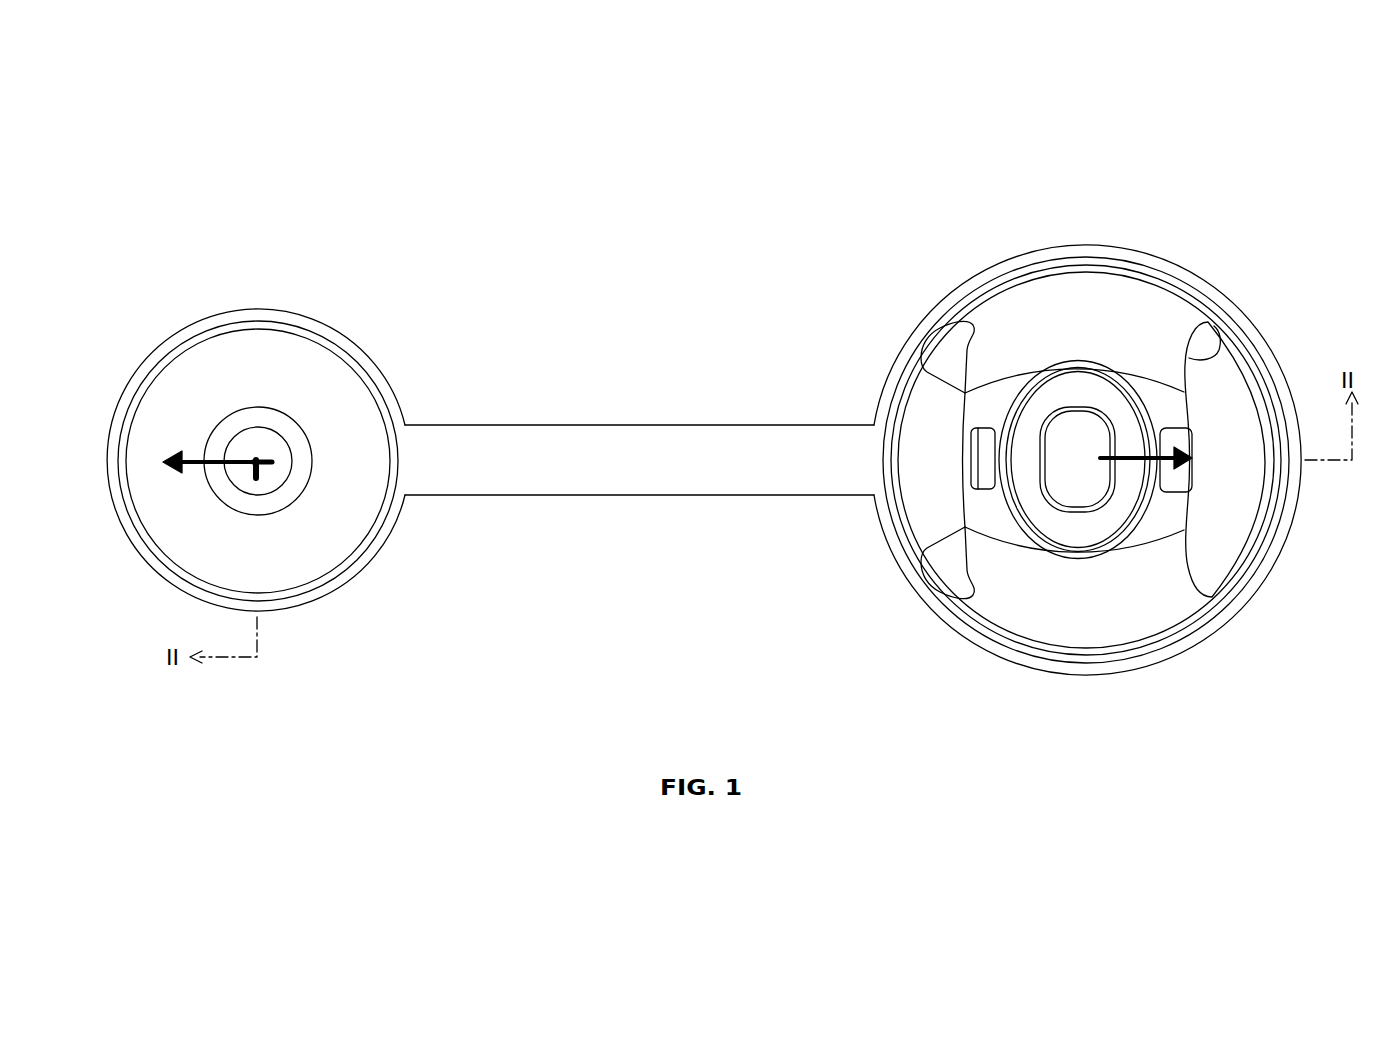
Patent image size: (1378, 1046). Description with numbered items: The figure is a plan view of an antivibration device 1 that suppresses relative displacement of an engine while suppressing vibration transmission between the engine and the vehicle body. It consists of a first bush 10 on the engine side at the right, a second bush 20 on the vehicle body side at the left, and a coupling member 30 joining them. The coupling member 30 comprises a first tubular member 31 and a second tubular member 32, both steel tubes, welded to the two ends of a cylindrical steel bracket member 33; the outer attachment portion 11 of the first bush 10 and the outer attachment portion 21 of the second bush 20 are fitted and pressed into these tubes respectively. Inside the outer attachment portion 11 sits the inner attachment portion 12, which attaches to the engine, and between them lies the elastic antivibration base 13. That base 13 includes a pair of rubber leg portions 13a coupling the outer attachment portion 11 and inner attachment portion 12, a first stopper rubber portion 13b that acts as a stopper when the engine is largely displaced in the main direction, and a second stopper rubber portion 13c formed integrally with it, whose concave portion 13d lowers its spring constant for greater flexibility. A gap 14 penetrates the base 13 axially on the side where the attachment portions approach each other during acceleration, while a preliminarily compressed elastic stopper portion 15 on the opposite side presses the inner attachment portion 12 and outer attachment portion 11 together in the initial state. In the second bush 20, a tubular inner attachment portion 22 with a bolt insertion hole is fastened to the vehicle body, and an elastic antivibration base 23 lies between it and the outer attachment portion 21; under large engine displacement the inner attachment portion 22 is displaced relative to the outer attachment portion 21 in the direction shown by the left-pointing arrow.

The antivibration device 1 is at (937, 138).
The first bush 10 is at (1222, 218).
The outer attachment portion 11 is at (972, 297).
The inner attachment portion 12 is at (1081, 388).
The antivibration base 13 is at (1143, 692).
The rubber leg portions 13a is at (1047, 294).
The first stopper rubber portion 13b is at (1190, 440).
The second stopper rubber portion 13c is at (963, 458).
The concave portion 13d is at (990, 437).
The gap 14 is at (1212, 333).
The stopper portion 15 is at (957, 502).
The second bush 20 is at (353, 298).
The outer attachment portion 21 is at (192, 347).
The inner attachment portion 22 is at (273, 420).
The antivibration base 23 is at (325, 560).
The coupling member 30 is at (659, 357).
The first tubular member 31 is at (903, 357).
The second tubular member 32 is at (367, 367).
The bracket member 33 is at (591, 442).